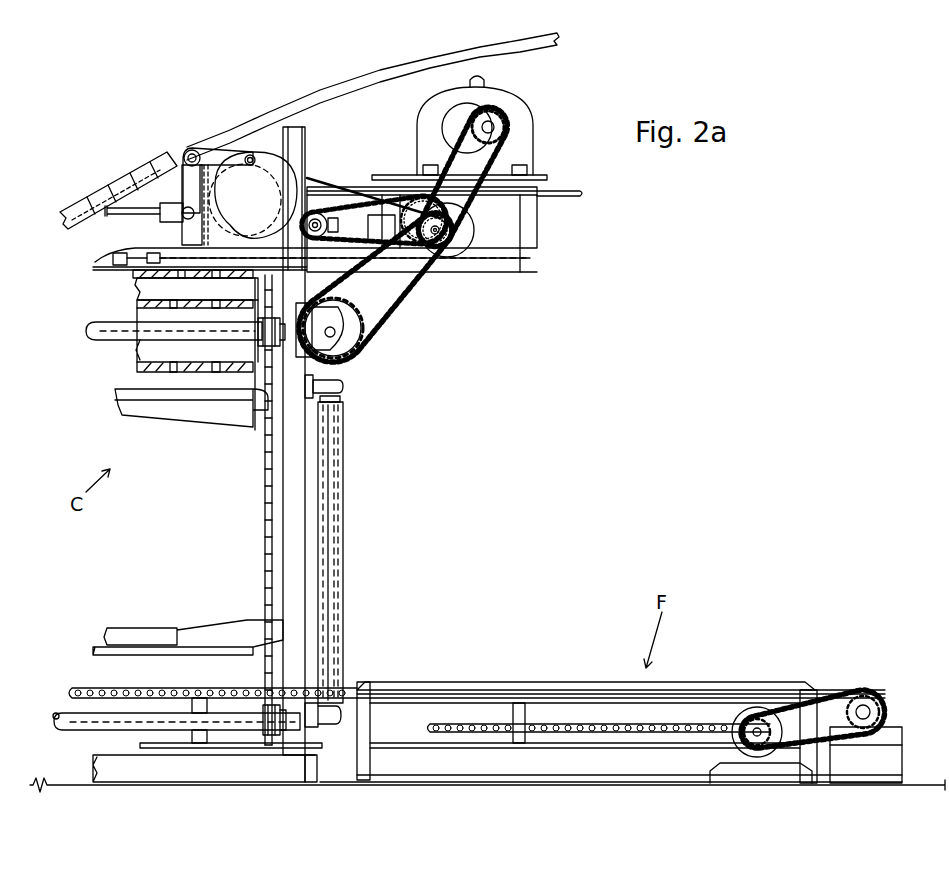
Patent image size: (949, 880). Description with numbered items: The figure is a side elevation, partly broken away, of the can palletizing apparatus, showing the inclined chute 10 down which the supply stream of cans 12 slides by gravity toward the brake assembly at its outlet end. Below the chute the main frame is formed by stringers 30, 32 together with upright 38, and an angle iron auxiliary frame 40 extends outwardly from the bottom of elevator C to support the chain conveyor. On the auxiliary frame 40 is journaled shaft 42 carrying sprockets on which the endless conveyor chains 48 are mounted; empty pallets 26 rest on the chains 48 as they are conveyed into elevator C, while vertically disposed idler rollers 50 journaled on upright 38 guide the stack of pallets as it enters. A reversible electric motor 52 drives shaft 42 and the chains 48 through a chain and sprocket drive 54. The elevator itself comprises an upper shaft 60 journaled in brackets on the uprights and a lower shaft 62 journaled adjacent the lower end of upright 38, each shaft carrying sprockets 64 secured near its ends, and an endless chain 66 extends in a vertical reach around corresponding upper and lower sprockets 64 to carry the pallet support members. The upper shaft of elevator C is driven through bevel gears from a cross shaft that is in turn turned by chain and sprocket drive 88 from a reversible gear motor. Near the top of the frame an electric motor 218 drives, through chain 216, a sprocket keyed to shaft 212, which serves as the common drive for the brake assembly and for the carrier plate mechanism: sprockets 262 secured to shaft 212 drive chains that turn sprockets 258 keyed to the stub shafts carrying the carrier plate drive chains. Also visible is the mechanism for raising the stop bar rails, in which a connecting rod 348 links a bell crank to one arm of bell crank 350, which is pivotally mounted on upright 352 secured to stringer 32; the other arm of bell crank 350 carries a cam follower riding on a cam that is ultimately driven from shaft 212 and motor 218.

The inclined chute 10 is at (267, 113).
The cans 12 is at (123, 175).
The empty pallets 26 is at (145, 318).
The stringer 30 is at (243, 768).
The stringer 32 is at (95, 262).
The upright 38 is at (290, 467).
The angle iron auxiliary frame 40 is at (571, 686).
The shaft 42 is at (869, 711).
The endless conveyor chains 48 is at (637, 728).
The idler rollers 50 is at (332, 539).
The reversible electric motor 52 is at (735, 753).
The chain and sprocket drive 54 is at (875, 692).
The upper shaft 60 is at (100, 331).
The lower shaft 62 is at (78, 718).
The sprockets 64 is at (263, 316).
The endless chain 66 is at (266, 516).
The chain and sprocket drive 88 is at (380, 323).
The shaft 212 is at (434, 237).
The chain 216 is at (467, 199).
The electric motor 218 is at (517, 107).
The sprockets 258 is at (347, 193).
The sprockets 262 is at (474, 232).
The connecting rod 348 is at (112, 214).
The bell crank 350 is at (185, 183).
The upright 352 is at (193, 229).